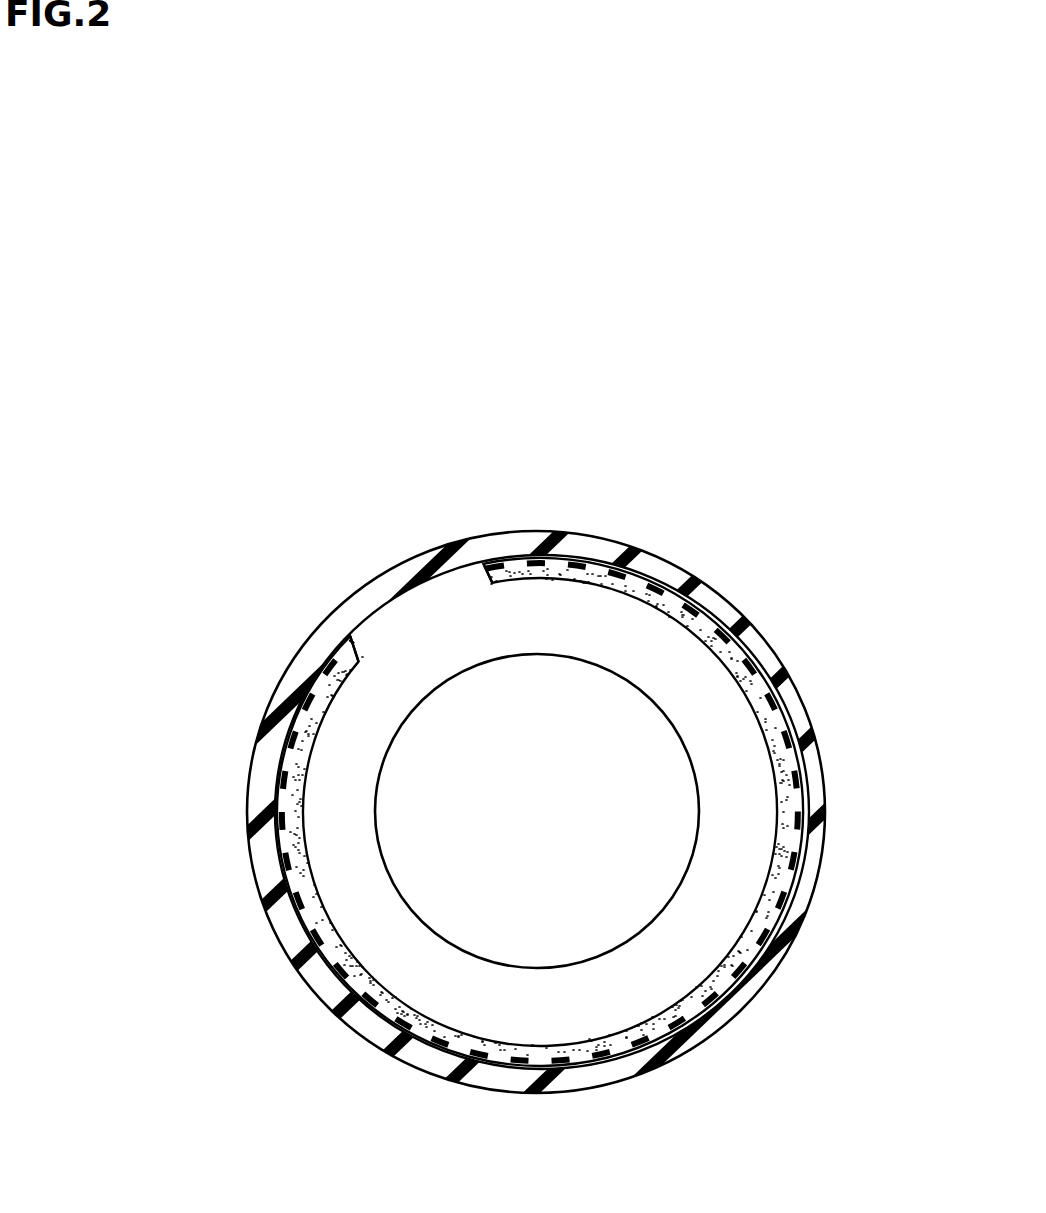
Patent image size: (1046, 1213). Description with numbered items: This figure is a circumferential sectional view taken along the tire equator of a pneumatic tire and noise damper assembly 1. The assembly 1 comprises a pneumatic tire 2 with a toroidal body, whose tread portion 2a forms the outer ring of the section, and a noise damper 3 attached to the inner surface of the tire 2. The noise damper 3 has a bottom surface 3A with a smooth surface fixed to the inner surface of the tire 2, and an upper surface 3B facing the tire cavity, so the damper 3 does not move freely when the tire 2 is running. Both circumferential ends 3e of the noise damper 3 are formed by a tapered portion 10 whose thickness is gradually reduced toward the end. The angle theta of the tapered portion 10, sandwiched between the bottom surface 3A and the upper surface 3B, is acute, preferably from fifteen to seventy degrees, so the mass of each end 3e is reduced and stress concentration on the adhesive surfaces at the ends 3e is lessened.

The pneumatic tire and noise damper assembly 1 is at (696, 424).
The pneumatic tire 2 is at (671, 566).
The tread portion 2a is at (302, 637).
The noise damper 3 is at (597, 744).
The bottom surface 3A is at (724, 687).
The upper surface 3B is at (747, 648).
The end 3e is at (457, 577).
The tapered portion 10 is at (466, 689).